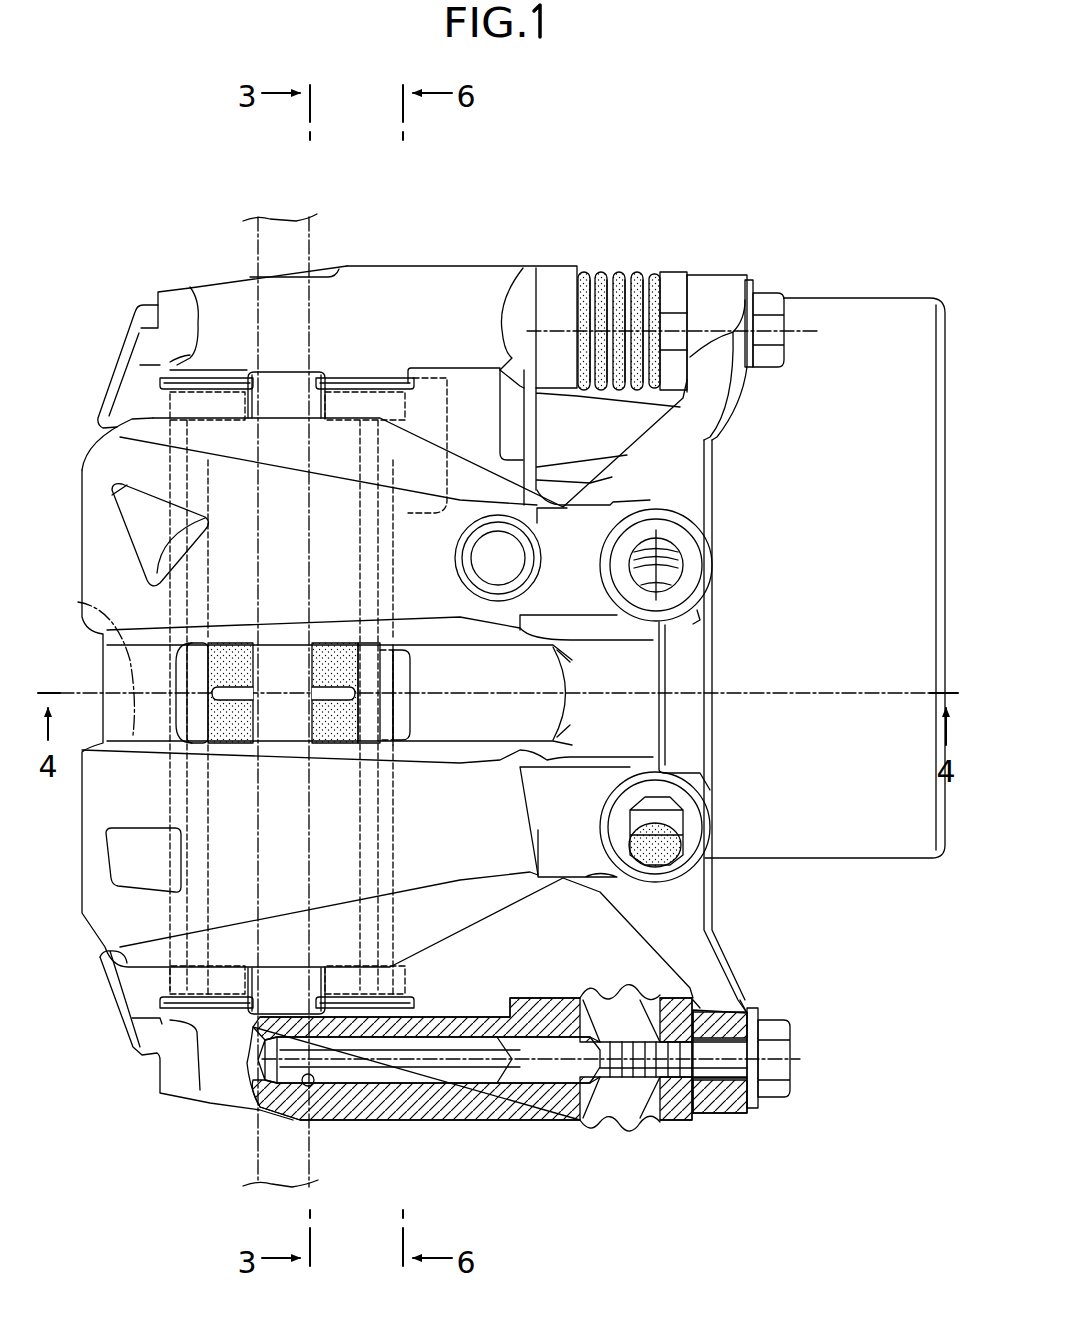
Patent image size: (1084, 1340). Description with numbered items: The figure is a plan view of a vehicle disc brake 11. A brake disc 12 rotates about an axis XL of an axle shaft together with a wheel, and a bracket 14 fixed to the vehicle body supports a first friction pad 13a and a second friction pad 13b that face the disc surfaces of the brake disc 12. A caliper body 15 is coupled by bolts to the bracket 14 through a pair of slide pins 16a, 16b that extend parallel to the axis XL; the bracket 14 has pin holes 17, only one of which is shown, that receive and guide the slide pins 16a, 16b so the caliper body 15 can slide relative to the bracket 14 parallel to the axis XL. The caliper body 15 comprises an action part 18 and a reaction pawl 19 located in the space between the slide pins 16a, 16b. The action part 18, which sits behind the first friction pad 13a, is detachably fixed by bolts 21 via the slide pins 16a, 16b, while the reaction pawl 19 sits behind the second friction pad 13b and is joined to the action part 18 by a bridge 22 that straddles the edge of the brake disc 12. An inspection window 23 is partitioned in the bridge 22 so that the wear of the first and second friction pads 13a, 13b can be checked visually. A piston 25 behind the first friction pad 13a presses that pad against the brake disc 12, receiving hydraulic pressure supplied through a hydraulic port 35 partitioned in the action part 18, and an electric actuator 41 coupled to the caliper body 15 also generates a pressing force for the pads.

The vehicle disc brake 11 is at (414, 698).
The brake disc 12 is at (257, 1152).
The first friction pad 13a is at (333, 748).
The second friction pad 13b is at (228, 748).
The bracket 14 is at (177, 1108).
The caliper body 15 is at (213, 183).
The slide pin 16a is at (430, 1077).
The slide pin 16b is at (668, 282).
The pin hole 17 is at (311, 1088).
The action part 18 is at (437, 433).
The reaction pawl 19 is at (152, 408).
The bolt 21 is at (764, 300).
The bridge 22 is at (284, 410).
The inspection window 23 is at (187, 660).
The piston 25 is at (410, 732).
The hydraulic port 35 is at (668, 582).
The electric actuator 41 is at (792, 868).
The axis of axle shaft XL is at (88, 659).